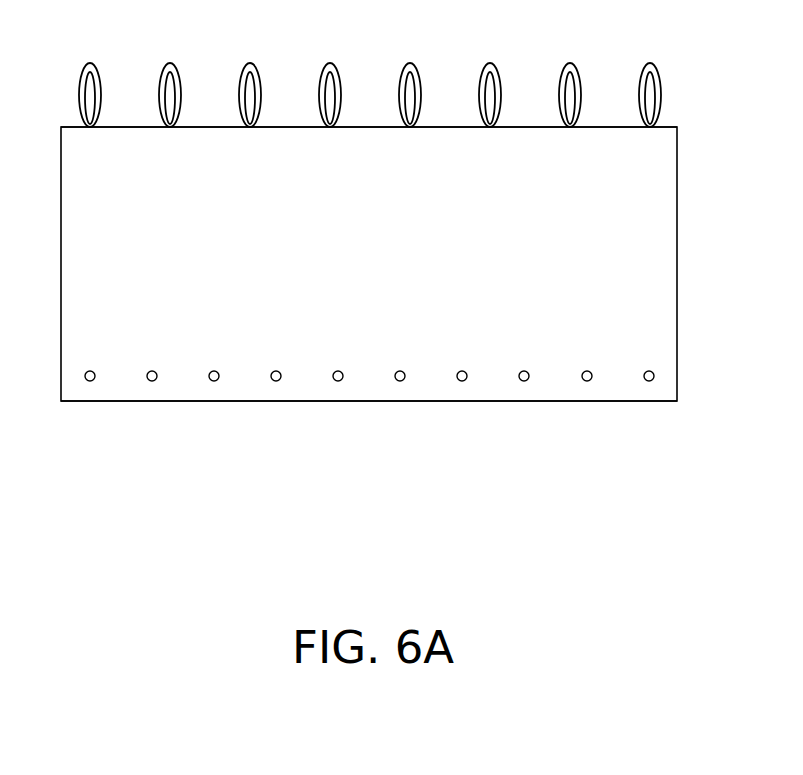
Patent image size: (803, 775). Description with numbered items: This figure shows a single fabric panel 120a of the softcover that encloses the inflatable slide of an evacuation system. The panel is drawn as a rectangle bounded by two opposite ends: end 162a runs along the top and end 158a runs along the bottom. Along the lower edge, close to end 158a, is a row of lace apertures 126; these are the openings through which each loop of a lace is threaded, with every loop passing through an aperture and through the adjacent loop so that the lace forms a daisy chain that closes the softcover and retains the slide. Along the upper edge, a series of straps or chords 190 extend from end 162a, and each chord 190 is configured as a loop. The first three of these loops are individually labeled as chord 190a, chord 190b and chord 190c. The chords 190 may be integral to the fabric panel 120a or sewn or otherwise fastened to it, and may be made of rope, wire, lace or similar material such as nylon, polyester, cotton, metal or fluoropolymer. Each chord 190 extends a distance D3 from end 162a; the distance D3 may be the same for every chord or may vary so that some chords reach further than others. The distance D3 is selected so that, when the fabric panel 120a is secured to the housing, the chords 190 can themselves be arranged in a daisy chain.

The fabric panel 120a is at (366, 246).
The end of fabric panel 162a is at (610, 127).
The end of fabric panel 158a is at (655, 401).
The lace aperture 126 is at (338, 381).
The chord 190a is at (88, 63).
The chord 190b is at (168, 63).
The chord 190c is at (248, 63).
The chords 190 is at (410, 65).
The distance D3 is at (66, 66).